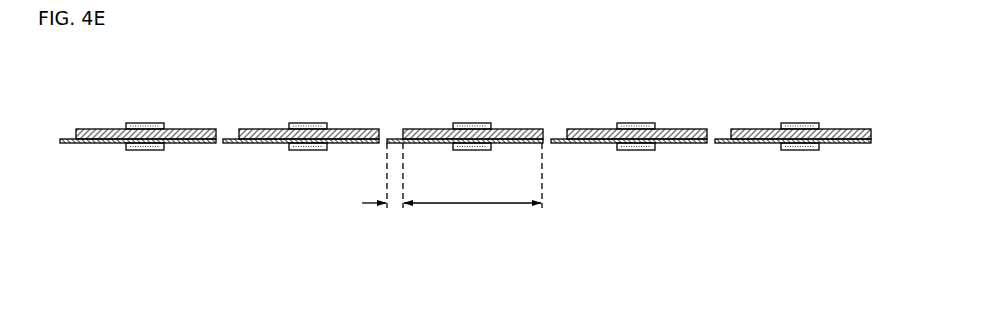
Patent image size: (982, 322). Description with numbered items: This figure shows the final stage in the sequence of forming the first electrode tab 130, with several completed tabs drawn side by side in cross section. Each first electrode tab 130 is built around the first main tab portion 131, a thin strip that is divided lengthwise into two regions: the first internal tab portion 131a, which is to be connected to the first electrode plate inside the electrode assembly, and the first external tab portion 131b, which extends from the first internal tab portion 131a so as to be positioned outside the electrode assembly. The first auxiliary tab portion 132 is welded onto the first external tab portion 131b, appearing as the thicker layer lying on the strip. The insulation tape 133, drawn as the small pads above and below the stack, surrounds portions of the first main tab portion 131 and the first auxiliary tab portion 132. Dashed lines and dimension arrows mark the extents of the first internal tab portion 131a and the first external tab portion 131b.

The first electrode tab 130 is at (397, 107).
The first main tab portion 131 is at (530, 128).
The first internal tab portion 131a is at (388, 190).
The first external tab portion 131b is at (472, 190).
The first auxiliary tab portion 132 is at (500, 128).
The insulation tape 133 is at (468, 123).